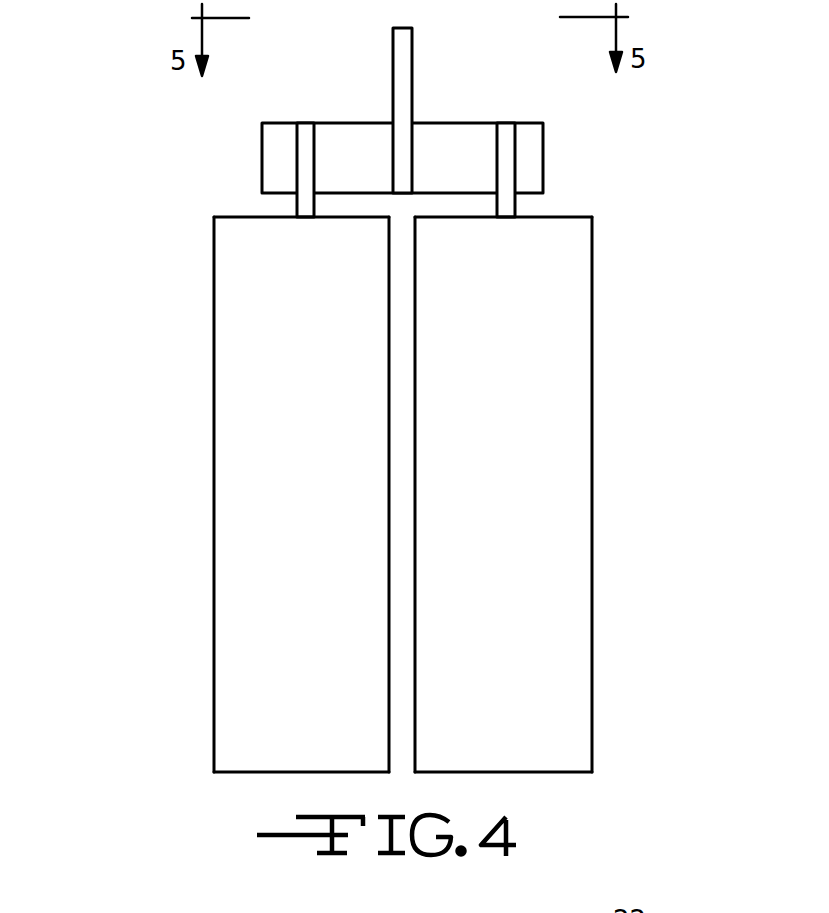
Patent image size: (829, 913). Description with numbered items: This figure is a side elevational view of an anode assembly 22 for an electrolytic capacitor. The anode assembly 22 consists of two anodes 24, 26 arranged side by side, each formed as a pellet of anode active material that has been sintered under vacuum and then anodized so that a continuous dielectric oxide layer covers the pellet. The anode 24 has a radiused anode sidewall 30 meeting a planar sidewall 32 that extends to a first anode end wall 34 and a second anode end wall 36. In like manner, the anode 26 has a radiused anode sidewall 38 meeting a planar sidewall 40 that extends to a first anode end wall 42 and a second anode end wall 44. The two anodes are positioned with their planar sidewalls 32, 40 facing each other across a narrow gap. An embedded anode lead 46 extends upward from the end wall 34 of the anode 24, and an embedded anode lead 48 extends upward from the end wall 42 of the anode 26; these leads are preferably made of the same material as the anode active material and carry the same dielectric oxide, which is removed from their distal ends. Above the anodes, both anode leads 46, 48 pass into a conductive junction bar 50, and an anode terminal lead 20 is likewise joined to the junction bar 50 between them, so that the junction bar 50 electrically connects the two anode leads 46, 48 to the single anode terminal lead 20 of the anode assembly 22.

The anode terminal lead 20 is at (400, 78).
The anode assembly 22 is at (665, 268).
The anode 24 is at (231, 493).
The anode 26 is at (551, 494).
The radiused anode sidewall 30 is at (213, 645).
The planar sidewall 32 is at (388, 595).
The first anode end wall 34 is at (238, 213).
The second anode end wall 36 is at (257, 775).
The radiused anode sidewall 38 is at (592, 629).
The planar sidewall 40 is at (414, 678).
The first anode end wall 42 is at (571, 213).
The second anode end wall 44 is at (555, 772).
The anode lead 46 is at (306, 132).
The anode lead 48 is at (507, 132).
The junction bar 50 is at (542, 132).